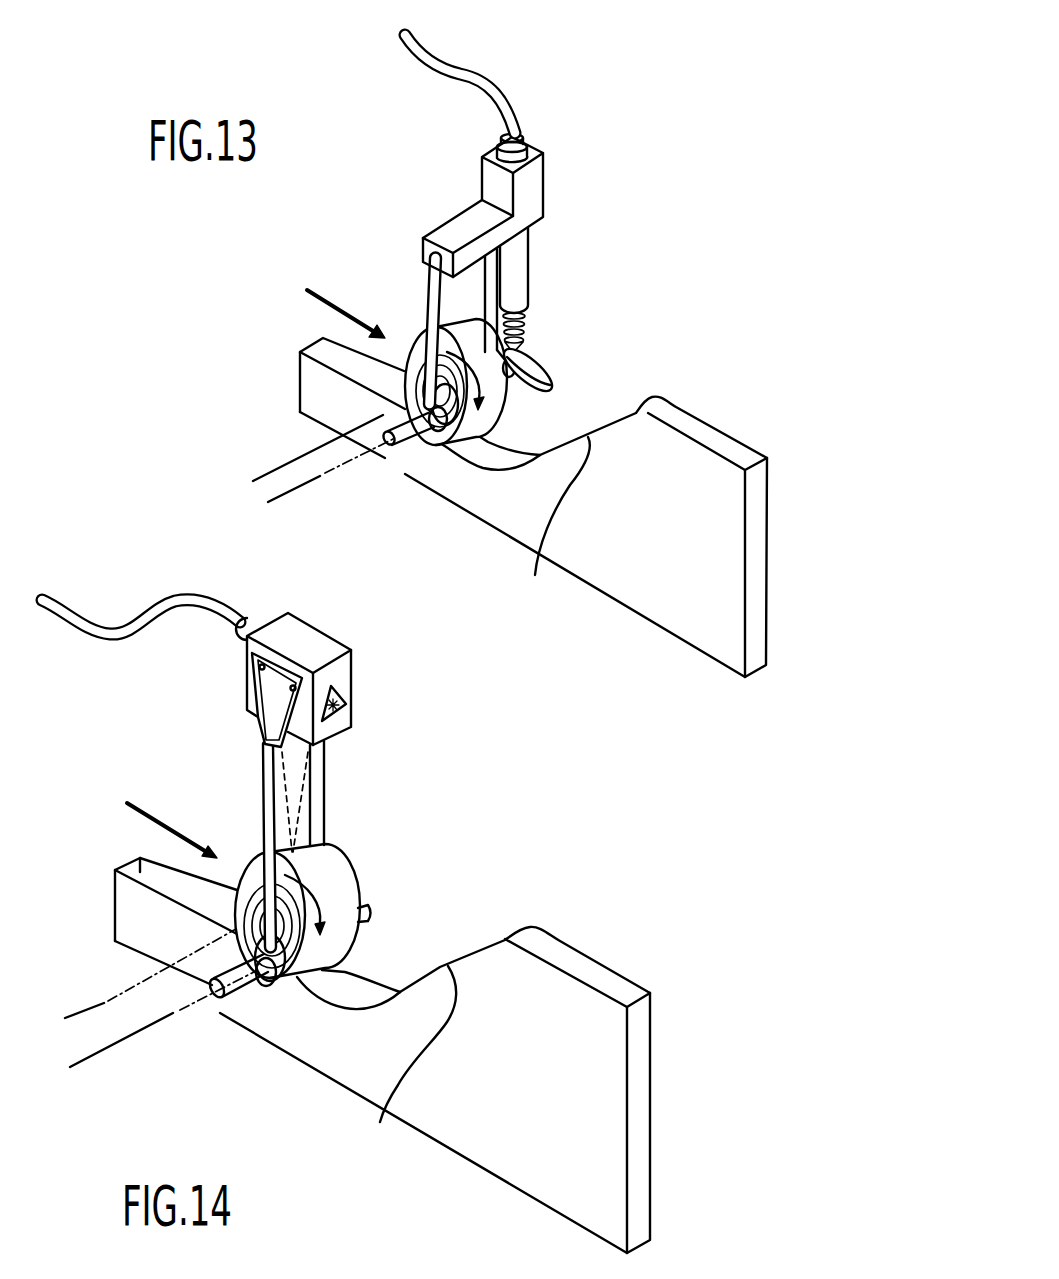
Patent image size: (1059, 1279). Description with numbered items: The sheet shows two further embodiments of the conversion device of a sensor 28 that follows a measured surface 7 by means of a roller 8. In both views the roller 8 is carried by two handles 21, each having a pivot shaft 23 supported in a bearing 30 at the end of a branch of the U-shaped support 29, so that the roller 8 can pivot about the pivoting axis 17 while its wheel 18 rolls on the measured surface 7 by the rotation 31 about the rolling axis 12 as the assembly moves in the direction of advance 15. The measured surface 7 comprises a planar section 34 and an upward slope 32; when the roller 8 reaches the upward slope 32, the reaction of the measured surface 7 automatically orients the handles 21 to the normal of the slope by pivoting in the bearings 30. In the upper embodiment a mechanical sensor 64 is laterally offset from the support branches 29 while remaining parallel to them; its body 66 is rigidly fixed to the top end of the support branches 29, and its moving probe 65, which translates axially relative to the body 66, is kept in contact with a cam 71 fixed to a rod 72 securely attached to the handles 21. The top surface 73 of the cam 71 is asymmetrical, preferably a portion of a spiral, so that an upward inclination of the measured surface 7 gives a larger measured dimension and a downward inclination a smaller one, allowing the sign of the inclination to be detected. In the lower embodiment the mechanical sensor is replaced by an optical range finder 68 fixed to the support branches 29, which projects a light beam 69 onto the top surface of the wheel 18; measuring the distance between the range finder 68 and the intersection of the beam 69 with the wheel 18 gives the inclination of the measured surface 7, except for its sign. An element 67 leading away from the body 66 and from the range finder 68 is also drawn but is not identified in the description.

In FIG. 13, the measured surface 7 is at (717, 438).
In FIG. 14, the measured surface 7 is at (610, 987).
In FIG. 13, the roller 8 is at (376, 351).
In FIG. 14, the roller 8 is at (223, 880).
In FIG. 13, the rolling axis 12 is at (320, 446).
In FIG. 14, the rolling axis 12 is at (100, 1003).
In FIG. 13, the direction of advance 15 is at (329, 288).
In FIG. 14, the direction of advance 15 is at (146, 800).
In FIG. 13, the pivoting axis 17 is at (300, 488).
In FIG. 14, the pivoting axis 17 is at (140, 1033).
In FIG. 13, the wheel 18 is at (403, 368).
In FIG. 14, the wheel 18 is at (247, 882).
In FIG. 13, the handles 21 is at (460, 445).
In FIG. 14, the handles 21 is at (303, 988).
In FIG. 13, the pivot shaft 23 is at (407, 440).
In FIG. 14, the pivot shaft 23 is at (237, 990).
In FIG. 14, the sensor 28 is at (240, 737).
In FIG. 13, the U-shaped support 29 is at (428, 275).
In FIG. 14, the U-shaped support 29 is at (266, 797).
In FIG. 13, the bearing 30 is at (432, 435).
In FIG. 14, the bearing 30 is at (270, 982).
In FIG. 13, the rotation 31 is at (400, 412).
In FIG. 14, the rotation 31 is at (322, 890).
In FIG. 13, the upward slope 32 is at (535, 575).
In FIG. 14, the upward slope 32 is at (380, 1122).
In FIG. 13, the planar section 34 is at (323, 338).
In FIG. 14, the planar section 34 is at (140, 868).
In FIG. 13, the mechanical sensor 64 is at (522, 266).
In FIG. 13, the probe 65 is at (531, 321).
In FIG. 13, the body 66 is at (530, 183).
In FIG. 13, the cable 67 is at (463, 70).
In FIG. 14, the cable 67 is at (163, 598).
In FIG. 14, the optical range finder 68 is at (321, 648).
In FIG. 14, the light beam 69 is at (303, 798).
In FIG. 13, the cam 71 is at (550, 382).
In FIG. 13, the rod 72 is at (538, 392).
In FIG. 13, the top surface 73 is at (541, 349).